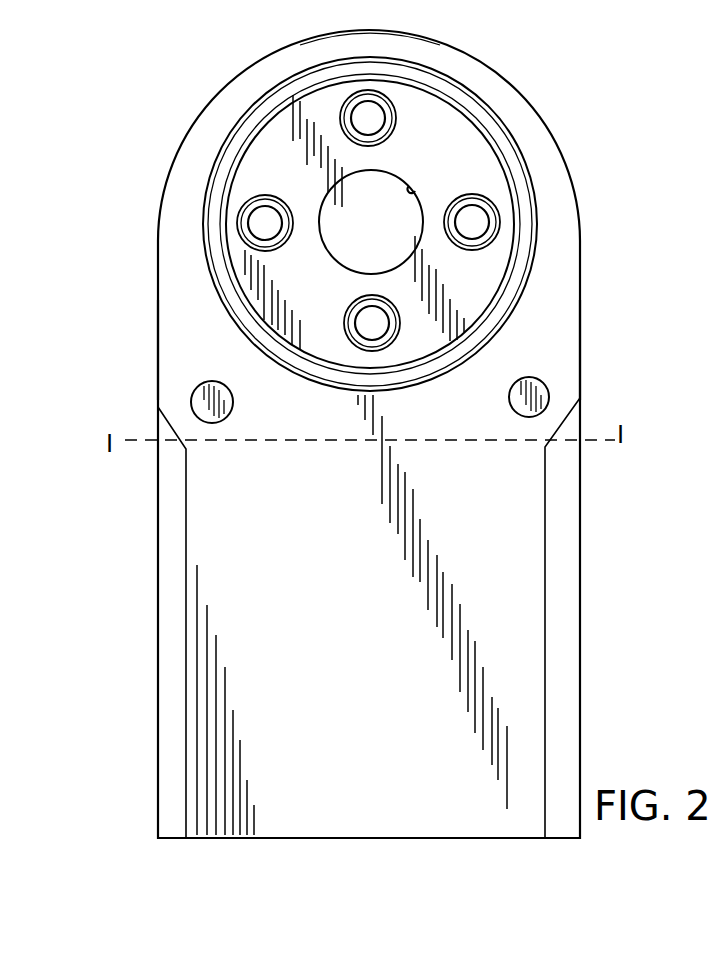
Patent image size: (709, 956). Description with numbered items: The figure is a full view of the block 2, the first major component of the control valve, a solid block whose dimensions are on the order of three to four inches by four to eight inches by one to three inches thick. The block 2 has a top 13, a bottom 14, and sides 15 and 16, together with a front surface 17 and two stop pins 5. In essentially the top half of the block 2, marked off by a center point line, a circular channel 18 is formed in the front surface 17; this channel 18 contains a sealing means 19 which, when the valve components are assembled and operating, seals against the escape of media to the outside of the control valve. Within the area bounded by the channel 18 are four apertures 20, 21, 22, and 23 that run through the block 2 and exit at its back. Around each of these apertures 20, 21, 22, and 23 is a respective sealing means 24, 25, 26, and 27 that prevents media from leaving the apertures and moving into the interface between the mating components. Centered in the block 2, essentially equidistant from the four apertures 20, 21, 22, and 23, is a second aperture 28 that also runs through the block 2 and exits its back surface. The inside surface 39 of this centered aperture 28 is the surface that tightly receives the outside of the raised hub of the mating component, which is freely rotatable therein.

The block 2 is at (173, 119).
The stop pins 5 is at (190, 400).
The top 13 is at (497, 80).
The bottom 14 is at (465, 838).
The side 15 is at (155, 344).
The side 16 is at (583, 395).
The front surface 17 is at (520, 576).
The circular channel 18 is at (512, 315).
The sealing means 19 is at (520, 260).
The aperture 20 is at (398, 108).
The aperture 21 is at (243, 243).
The aperture 22 is at (388, 350).
The aperture 23 is at (495, 237).
The sealing means 24 is at (350, 108).
The sealing means 25 is at (243, 207).
The sealing means 26 is at (345, 347).
The sealing means 27 is at (485, 190).
The second aperture 28 is at (344, 248).
The inside surface 39 is at (407, 190).